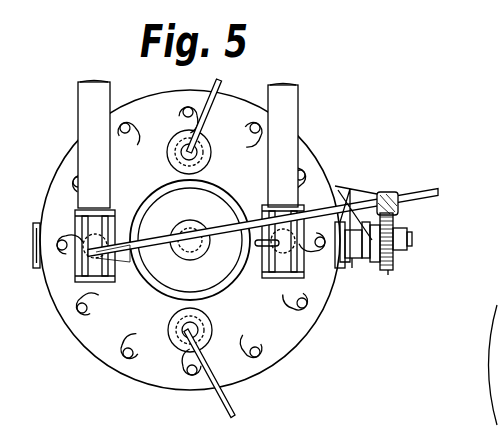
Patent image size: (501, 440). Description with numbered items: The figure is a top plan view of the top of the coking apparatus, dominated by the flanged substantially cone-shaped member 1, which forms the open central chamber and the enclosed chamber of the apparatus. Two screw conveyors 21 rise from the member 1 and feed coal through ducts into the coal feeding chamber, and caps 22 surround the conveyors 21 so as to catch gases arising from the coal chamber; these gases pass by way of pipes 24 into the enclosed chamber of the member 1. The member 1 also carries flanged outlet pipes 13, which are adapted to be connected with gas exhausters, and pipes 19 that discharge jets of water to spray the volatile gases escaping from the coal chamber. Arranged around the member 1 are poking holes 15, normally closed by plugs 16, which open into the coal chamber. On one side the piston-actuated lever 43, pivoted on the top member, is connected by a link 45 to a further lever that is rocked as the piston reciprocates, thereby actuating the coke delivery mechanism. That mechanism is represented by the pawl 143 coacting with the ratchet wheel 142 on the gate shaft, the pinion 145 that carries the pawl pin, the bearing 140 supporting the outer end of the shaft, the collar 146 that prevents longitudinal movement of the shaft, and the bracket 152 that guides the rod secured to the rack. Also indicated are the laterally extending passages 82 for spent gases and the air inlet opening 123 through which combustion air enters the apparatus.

The flanged substantially cone-shaped member 1 is at (312, 150).
The flanged outlet pipes 13 is at (200, 153).
The poking holes 15 is at (112, 350).
The plugs 16 is at (130, 127).
The pipes 19 is at (221, 82).
The screw conveyors 21 is at (90, 105).
The caps 22 is at (304, 258).
The pipes 24 is at (243, 268).
The lever 43 is at (412, 193).
The link 45 is at (390, 192).
The laterally extending passages 82 is at (340, 268).
The inlet opening 123 is at (352, 268).
The bearing 140 is at (362, 262).
The ratchet wheel 142 is at (375, 265).
The pawl 143 is at (386, 230).
The pinion 145 is at (388, 268).
The collar 146 is at (405, 245).
The bracket 152 is at (338, 185).